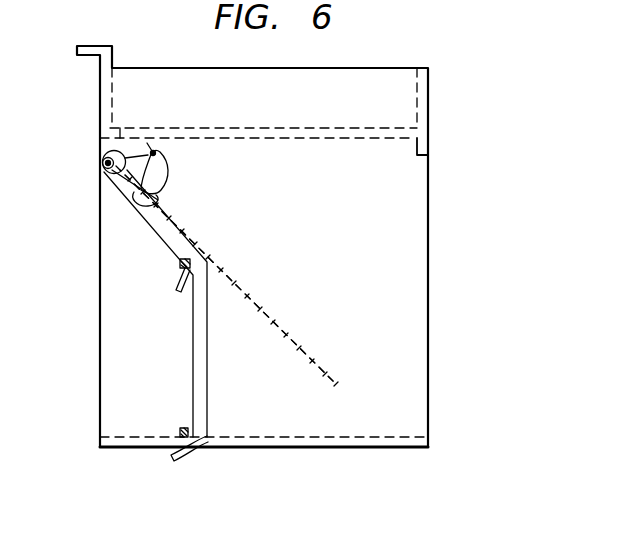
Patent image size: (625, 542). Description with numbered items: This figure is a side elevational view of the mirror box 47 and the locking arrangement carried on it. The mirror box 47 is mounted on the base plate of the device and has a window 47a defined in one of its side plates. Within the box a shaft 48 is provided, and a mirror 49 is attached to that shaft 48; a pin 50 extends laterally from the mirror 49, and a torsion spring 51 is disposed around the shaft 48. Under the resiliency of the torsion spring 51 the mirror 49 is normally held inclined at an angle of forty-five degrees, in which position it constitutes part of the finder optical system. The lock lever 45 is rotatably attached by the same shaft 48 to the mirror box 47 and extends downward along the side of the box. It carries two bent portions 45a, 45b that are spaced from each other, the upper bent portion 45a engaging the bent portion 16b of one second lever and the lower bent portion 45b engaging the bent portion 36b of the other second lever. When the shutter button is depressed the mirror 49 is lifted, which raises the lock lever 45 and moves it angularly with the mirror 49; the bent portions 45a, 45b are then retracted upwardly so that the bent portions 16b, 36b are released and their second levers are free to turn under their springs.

The mirror box 47 is at (430, 237).
The window 47a is at (164, 164).
The shaft 48 is at (103, 167).
The mirror 49 is at (281, 316).
The pin 50 is at (167, 196).
The torsion spring 51 is at (106, 152).
The lock lever 45 is at (208, 358).
The bent portion 45a is at (178, 290).
The bent portion 45b is at (180, 458).
The bent portion 16b is at (181, 266).
The bent portion 36b is at (183, 429).